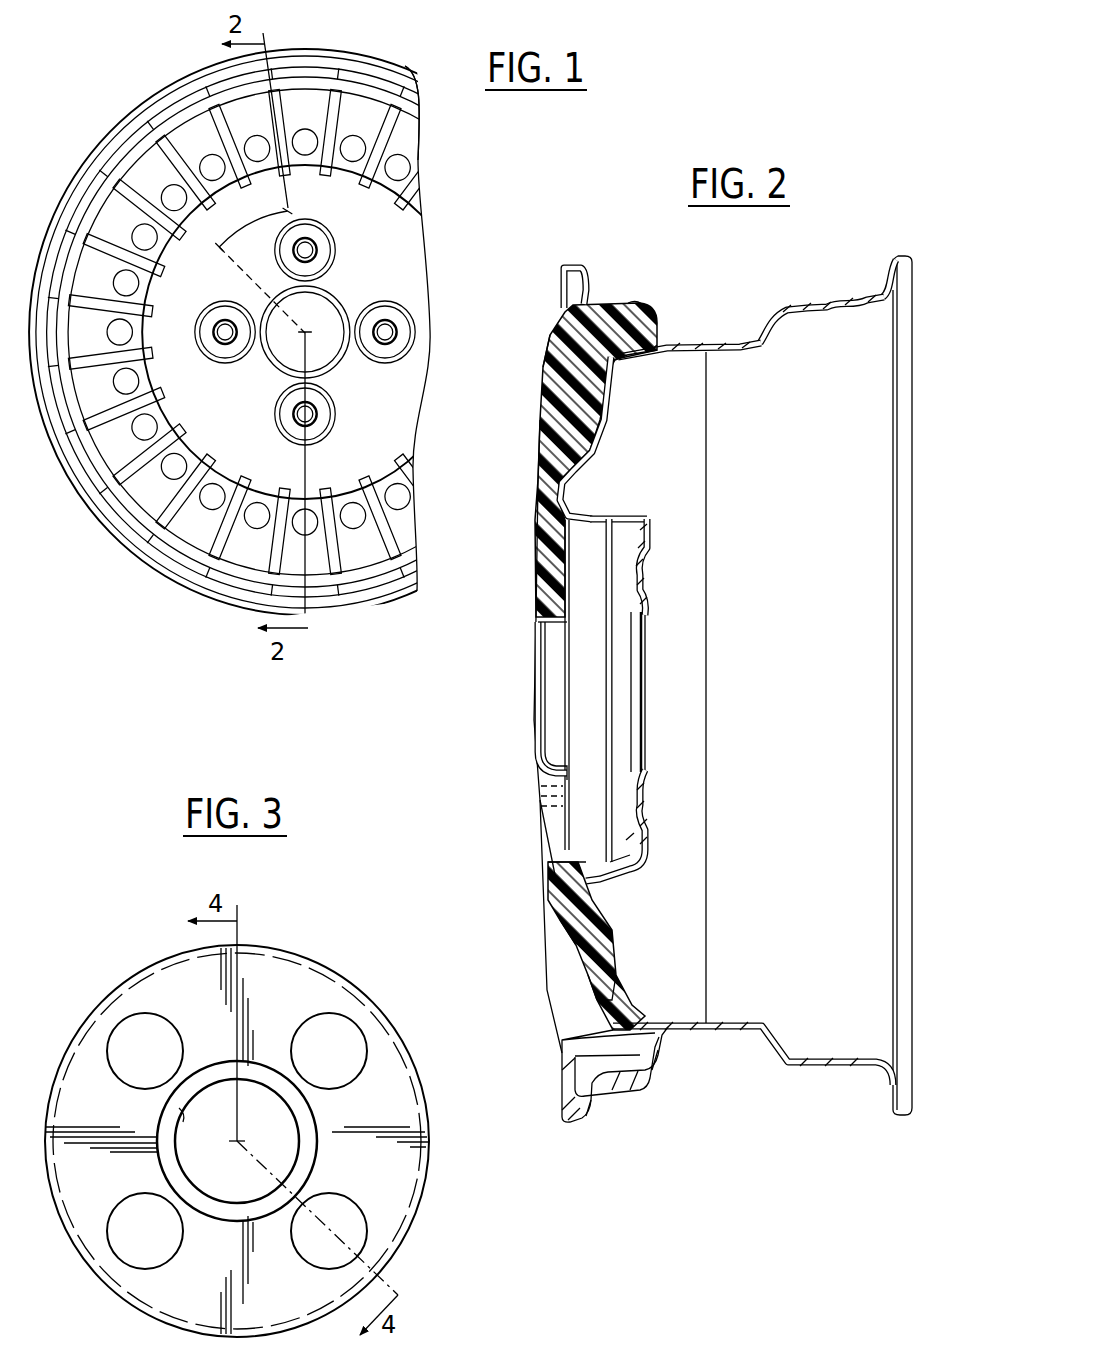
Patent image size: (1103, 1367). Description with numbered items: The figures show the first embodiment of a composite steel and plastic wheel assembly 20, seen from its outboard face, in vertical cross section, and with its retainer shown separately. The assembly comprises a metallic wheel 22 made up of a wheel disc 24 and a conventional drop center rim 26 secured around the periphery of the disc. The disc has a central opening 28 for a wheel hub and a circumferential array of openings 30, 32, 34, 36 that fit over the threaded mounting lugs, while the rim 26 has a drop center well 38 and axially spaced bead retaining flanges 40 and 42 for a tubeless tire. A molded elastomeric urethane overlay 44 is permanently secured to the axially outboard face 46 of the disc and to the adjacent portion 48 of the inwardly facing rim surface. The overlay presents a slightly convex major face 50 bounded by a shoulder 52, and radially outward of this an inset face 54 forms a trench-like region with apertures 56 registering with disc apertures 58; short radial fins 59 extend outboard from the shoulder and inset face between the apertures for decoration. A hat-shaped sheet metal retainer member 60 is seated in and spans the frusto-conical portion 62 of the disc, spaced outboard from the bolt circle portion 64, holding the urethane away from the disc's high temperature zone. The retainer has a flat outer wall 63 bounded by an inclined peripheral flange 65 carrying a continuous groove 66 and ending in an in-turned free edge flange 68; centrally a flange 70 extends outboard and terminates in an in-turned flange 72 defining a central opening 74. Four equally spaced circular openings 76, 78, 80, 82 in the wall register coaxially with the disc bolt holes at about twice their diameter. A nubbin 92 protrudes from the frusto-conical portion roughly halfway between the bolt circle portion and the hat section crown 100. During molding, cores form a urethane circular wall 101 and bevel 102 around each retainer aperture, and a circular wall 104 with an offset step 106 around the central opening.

In FIG. 1, the wheel assembly 20 is at (428, 165).
In FIG. 2, the metallic wheel 22 is at (914, 352).
In FIG. 2, the wheel disc 24 is at (712, 456).
In FIG. 2, the drop center rim 26 is at (808, 298).
In FIG. 2, the central opening 28 is at (640, 627).
In FIG. 1, the opening 30 is at (223, 328).
In FIG. 1, the opening 32 is at (310, 252).
In FIG. 1, the opening 34 is at (389, 328).
In FIG. 1, the opening 36 is at (312, 413).
In FIG. 2, the opening 36 is at (631, 816).
In FIG. 2, the drop center well 38 is at (722, 345).
In FIG. 2, the bead retaining flange 40 is at (580, 272).
In FIG. 2, the bead retaining flange 42 is at (886, 272).
In FIG. 1, the overlay 44 is at (112, 172).
In FIG. 2, the overlay 44 is at (540, 346).
In FIG. 2, the axially outboard face 46 is at (602, 393).
In FIG. 2, the rim surface portion 48 is at (621, 320).
In FIG. 1, the major face 50 is at (246, 429).
In FIG. 2, the major face 50 is at (536, 508).
In FIG. 1, the shoulder 52 is at (262, 197).
In FIG. 2, the shoulder 52 is at (546, 391).
In FIG. 2, the inset face 54 is at (557, 1047).
In FIG. 1, the apertures 56 is at (251, 141).
In FIG. 2, the apertures 56 is at (592, 997).
In FIG. 2, the disc apertures 58 is at (611, 980).
In FIG. 1, the fins 59 is at (383, 112).
In FIG. 2, the fins 59 is at (546, 942).
In FIG. 2, the retainer member 60 is at (617, 680).
In FIG. 3, the retainer member 60 is at (291, 950).
In FIG. 2, the frusto-conical portion 62 is at (614, 516).
In FIG. 2, the outer wall 63 is at (566, 589).
In FIG. 3, the outer wall 63 is at (410, 1176).
In FIG. 2, the bolt circle portion 64 is at (641, 559).
In FIG. 2, the flange 65 is at (580, 527).
In FIG. 3, the flange 65 is at (340, 983).
In FIG. 2, the groove 66 is at (604, 889).
In FIG. 2, the free edge flange 68 is at (606, 746).
In FIG. 2, the flange 70 is at (561, 770).
In FIG. 3, the flange 70 is at (206, 1218).
In FIG. 2, the in-turned flange 72 is at (540, 753).
In FIG. 3, the in-turned flange 72 is at (299, 1116).
In FIG. 2, the central opening 74 is at (547, 648).
In FIG. 3, the central opening 74 is at (183, 1115).
In FIG. 3, the circular opening 76 is at (118, 1206).
In FIG. 3, the circular opening 78 is at (121, 1022).
In FIG. 3, the circular opening 80 is at (355, 1024).
In FIG. 2, the circular opening 82 is at (566, 812).
In FIG. 3, the circular opening 82 is at (344, 1205).
In FIG. 2, the nubbin 92 is at (596, 510).
In FIG. 2, the hat section crown 100 is at (541, 453).
In FIG. 2, the circular wall 101 is at (550, 846).
In FIG. 2, the bevel 102 is at (541, 863).
In FIG. 2, the circular wall 104 is at (546, 646).
In FIG. 2, the offset step 106 is at (531, 679).